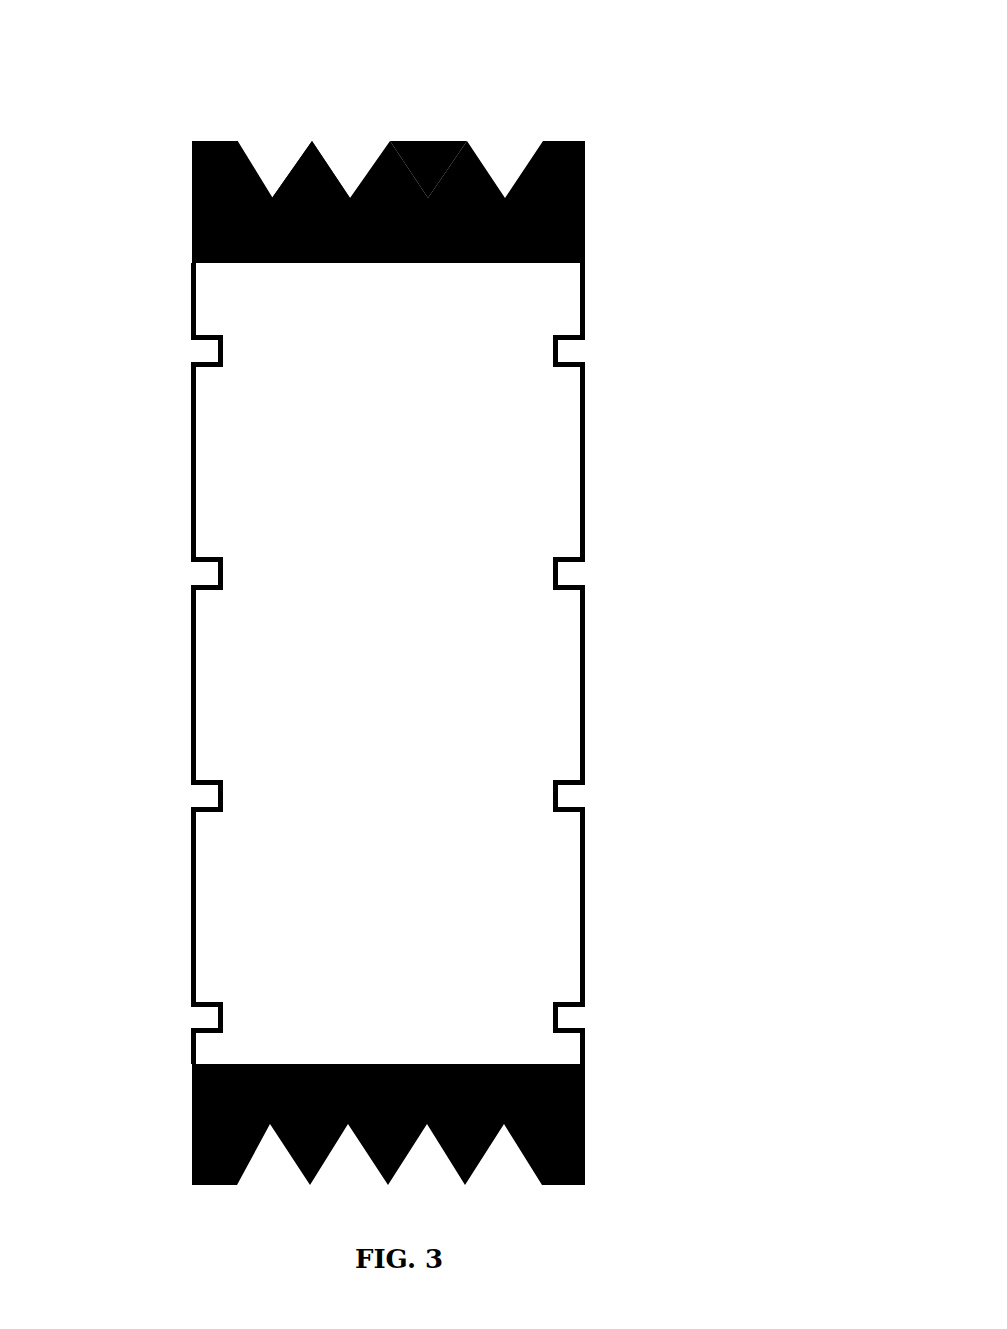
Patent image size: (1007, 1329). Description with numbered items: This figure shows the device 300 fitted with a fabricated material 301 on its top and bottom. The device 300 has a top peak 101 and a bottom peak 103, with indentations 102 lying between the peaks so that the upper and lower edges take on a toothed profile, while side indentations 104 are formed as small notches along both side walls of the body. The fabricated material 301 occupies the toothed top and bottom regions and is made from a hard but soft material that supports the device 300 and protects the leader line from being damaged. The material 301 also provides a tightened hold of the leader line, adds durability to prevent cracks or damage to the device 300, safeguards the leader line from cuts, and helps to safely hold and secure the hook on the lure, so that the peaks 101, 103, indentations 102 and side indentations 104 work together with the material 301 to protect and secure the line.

The device 300 is at (448, 601).
The fabricated material 301 is at (446, 189).
The top peak 101 is at (312, 122).
The indentations 102 is at (428, 160).
The bottom peak 103 is at (281, 214).
The side indentations 104 is at (180, 572).